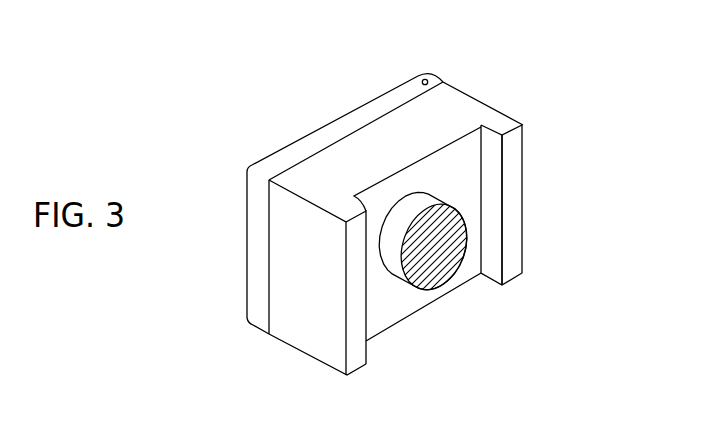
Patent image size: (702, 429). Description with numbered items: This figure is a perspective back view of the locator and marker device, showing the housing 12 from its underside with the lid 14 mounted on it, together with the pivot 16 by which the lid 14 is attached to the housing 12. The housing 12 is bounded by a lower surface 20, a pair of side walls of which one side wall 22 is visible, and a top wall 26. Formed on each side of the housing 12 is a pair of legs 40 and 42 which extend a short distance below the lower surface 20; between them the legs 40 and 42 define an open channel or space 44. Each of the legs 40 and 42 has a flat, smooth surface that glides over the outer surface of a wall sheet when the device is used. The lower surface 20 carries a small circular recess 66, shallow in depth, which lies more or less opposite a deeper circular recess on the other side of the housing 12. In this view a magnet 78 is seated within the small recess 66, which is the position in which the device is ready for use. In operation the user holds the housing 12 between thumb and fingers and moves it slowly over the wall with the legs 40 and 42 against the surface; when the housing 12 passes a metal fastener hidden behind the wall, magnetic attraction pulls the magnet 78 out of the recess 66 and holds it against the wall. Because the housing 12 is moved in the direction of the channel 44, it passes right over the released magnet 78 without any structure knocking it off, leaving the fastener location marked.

The housing 12 is at (462, 88).
The lid 14 is at (255, 249).
The aperture 16 is at (422, 78).
The lower surface 20 is at (460, 147).
The side wall 22 is at (285, 328).
The top wall 26 is at (302, 165).
The leg 40 is at (494, 160).
The leg 42 is at (347, 261).
The open channel or space 44 is at (397, 333).
The small recess 66 is at (398, 202).
The magnet 78 is at (437, 270).